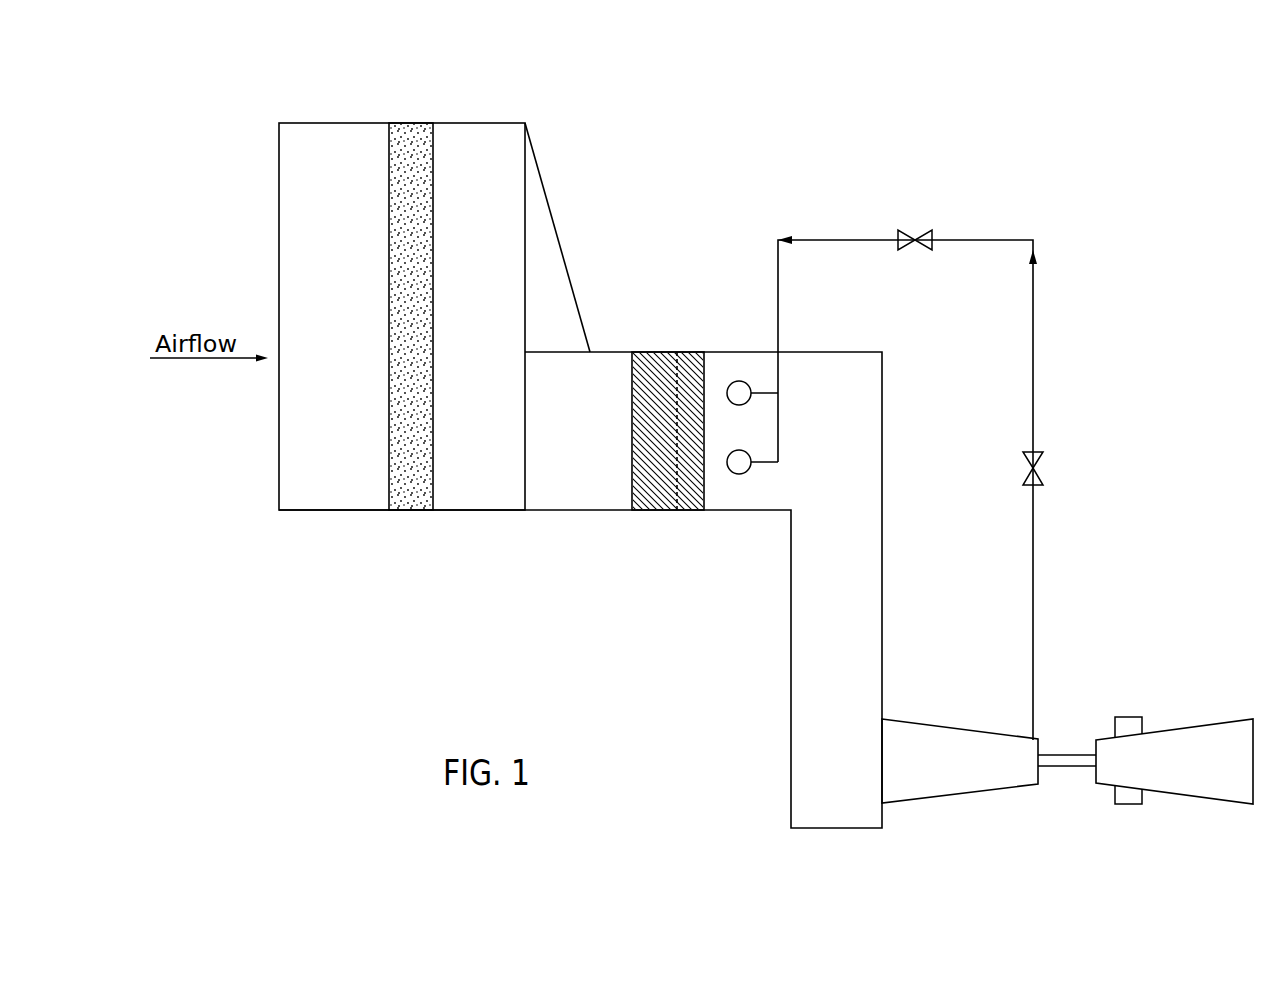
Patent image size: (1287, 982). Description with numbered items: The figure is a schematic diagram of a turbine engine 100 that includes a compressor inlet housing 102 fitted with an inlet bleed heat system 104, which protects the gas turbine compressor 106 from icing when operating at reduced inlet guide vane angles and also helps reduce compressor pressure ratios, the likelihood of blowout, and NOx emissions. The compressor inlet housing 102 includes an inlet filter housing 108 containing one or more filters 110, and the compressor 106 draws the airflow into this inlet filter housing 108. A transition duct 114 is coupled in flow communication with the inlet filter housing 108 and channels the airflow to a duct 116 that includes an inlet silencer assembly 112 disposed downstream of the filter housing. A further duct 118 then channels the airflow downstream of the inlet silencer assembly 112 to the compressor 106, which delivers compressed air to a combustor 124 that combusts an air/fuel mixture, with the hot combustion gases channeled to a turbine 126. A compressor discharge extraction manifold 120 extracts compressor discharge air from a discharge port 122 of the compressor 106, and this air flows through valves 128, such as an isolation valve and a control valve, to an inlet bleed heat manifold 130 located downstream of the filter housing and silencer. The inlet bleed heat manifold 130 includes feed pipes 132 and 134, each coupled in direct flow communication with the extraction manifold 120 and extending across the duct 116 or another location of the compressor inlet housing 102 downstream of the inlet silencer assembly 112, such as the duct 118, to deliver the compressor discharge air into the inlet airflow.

The turbine engine 100 is at (1137, 85).
The compressor inlet housing 102 is at (806, 156).
The inlet bleed heat system 104 is at (690, 248).
The gas turbine compressor 106 is at (950, 774).
The inlet filter housing 108 is at (471, 148).
The filters 110 is at (414, 488).
The inlet silencer assembly 112 is at (663, 372).
The transition duct 114 is at (568, 268).
The duct 116 is at (645, 495).
The duct 118 is at (883, 510).
The compressor discharge extraction manifold 120 is at (1035, 370).
The discharge port 122 is at (1040, 738).
The combustor 124 is at (1130, 728).
The turbine 126 is at (1215, 774).
The valves 128 is at (918, 235).
The inlet bleed heat manifold 130 is at (734, 482).
The feed pipe 132 is at (740, 381).
The feed pipe 134 is at (747, 472).